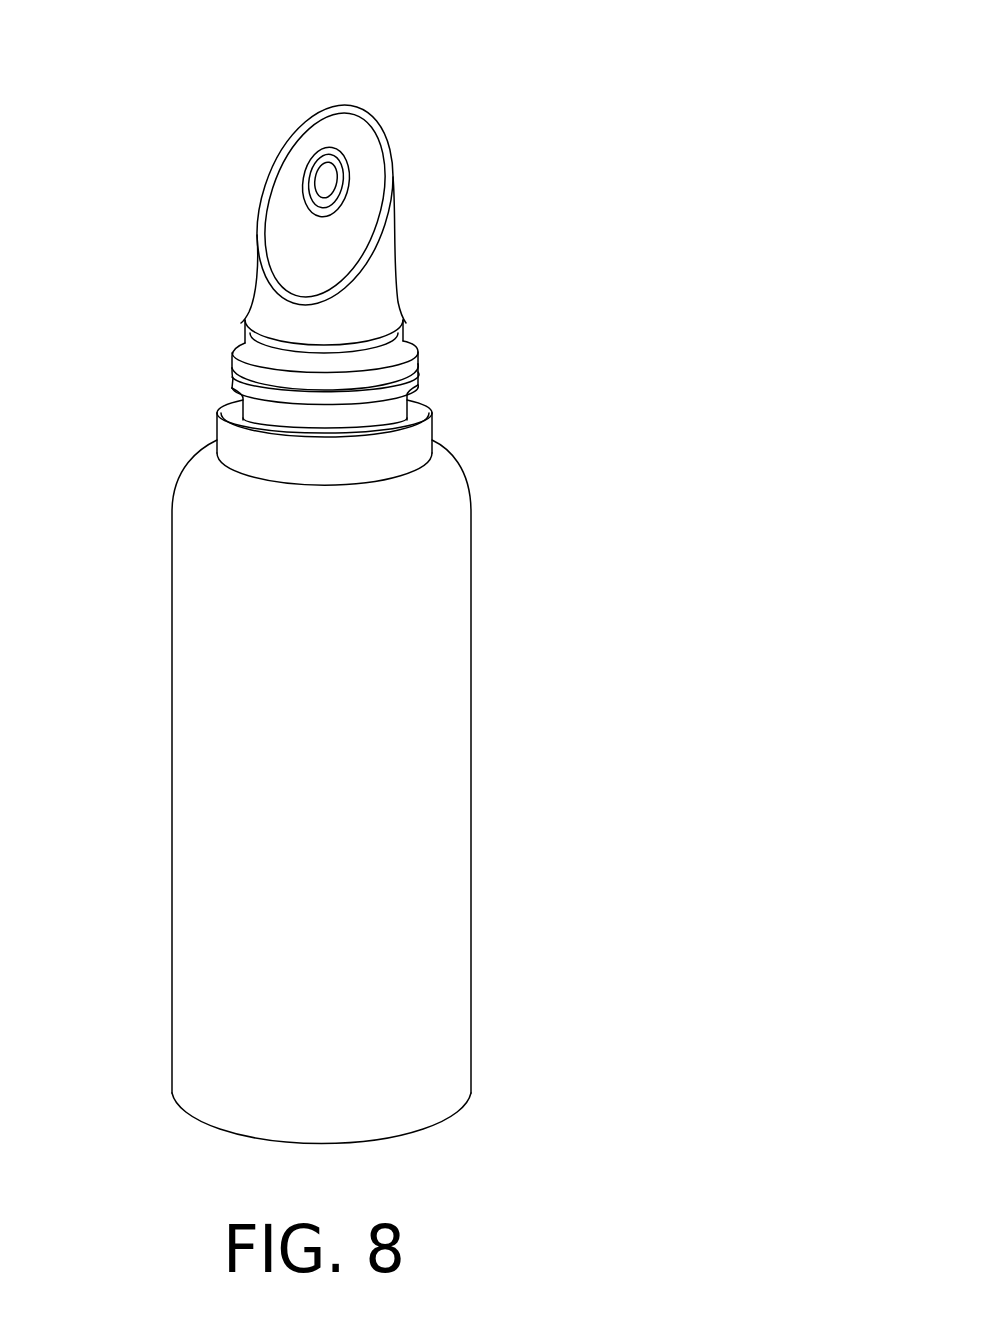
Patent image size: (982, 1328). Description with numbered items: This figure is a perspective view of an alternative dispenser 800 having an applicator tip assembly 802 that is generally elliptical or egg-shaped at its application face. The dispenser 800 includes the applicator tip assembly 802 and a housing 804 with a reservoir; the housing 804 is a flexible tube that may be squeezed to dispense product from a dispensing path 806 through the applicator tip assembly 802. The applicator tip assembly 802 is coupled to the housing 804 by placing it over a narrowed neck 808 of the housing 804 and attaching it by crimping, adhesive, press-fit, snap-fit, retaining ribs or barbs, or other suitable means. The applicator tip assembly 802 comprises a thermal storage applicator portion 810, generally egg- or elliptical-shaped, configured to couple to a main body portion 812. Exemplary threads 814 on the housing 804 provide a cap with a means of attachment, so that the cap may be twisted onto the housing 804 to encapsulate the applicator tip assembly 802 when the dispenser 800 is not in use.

The dispenser 800 is at (503, 52).
The applicator tip assembly 802 is at (218, 223).
The housing 804 is at (175, 572).
The dispensing path 806 is at (325, 173).
The narrowed neck 808 is at (462, 473).
The thermal storage applicator portion 810 is at (365, 198).
The main body portion 812 is at (382, 287).
The threads 814 is at (410, 342).